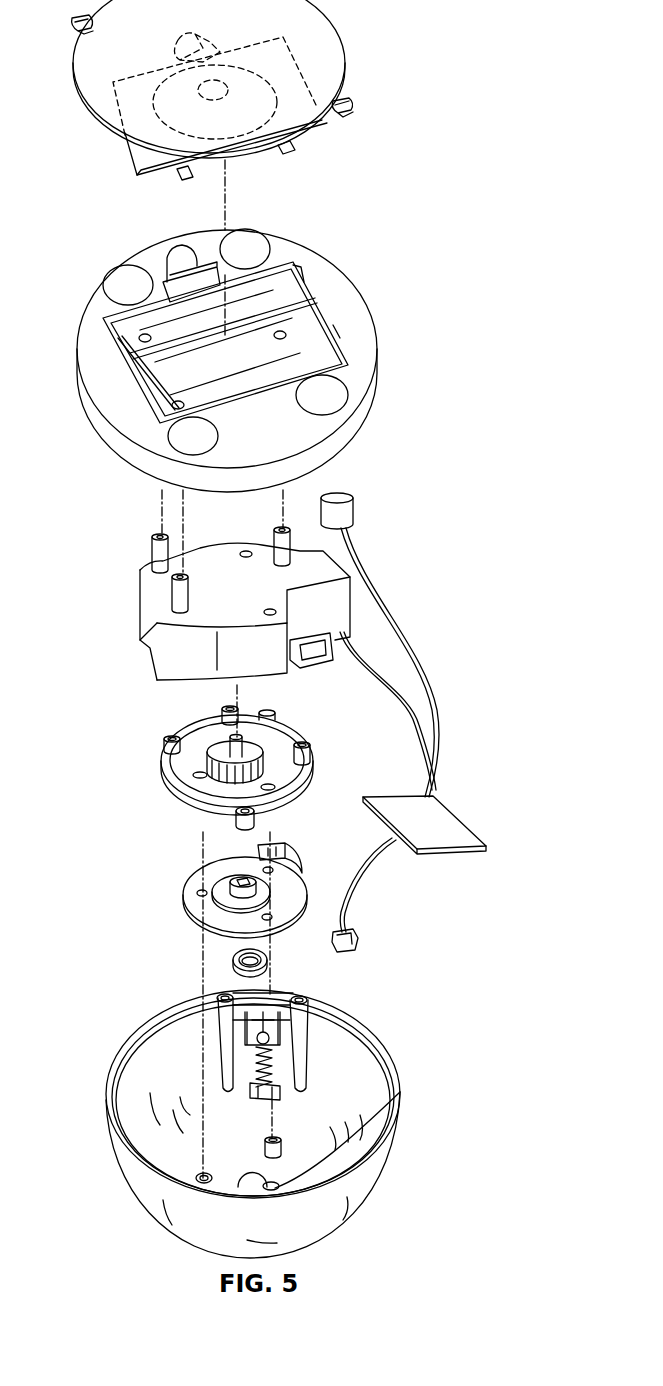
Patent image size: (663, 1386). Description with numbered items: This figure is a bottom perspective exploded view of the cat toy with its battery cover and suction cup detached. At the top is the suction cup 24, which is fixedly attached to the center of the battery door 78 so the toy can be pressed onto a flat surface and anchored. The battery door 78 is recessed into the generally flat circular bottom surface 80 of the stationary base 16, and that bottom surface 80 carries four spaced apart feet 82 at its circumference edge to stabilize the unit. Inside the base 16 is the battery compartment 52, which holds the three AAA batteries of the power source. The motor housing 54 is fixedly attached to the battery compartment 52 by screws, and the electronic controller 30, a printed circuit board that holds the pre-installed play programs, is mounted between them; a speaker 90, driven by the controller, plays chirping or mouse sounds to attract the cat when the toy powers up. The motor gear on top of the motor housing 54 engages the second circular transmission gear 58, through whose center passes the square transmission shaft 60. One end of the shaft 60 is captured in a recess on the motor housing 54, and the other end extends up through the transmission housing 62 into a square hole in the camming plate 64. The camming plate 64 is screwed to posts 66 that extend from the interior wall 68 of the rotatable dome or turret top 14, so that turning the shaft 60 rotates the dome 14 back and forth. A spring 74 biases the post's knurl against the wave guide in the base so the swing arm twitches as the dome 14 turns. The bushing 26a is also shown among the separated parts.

The rotatable dome or turret top 14 is at (345, 1210).
The stationary base 16 is at (93, 418).
The suction cup 24 is at (152, 44).
The bushing 26a is at (232, 963).
The electronic controller 30 is at (454, 824).
The battery compartment 52 is at (273, 298).
The motor housing 54 is at (148, 623).
The second circular transmission gear 58 is at (223, 778).
The square transmission shaft 60 is at (233, 750).
The transmission housing 62 is at (165, 790).
The camming plate 64 is at (197, 902).
The posts 66 is at (200, 1180).
The interior wall 68 is at (150, 1103).
The spring 74 is at (273, 1070).
The battery door 78 is at (150, 167).
The flat circular bottom surface 80 is at (100, 383).
The feet 82 is at (123, 278).
The speaker 90 is at (352, 512).